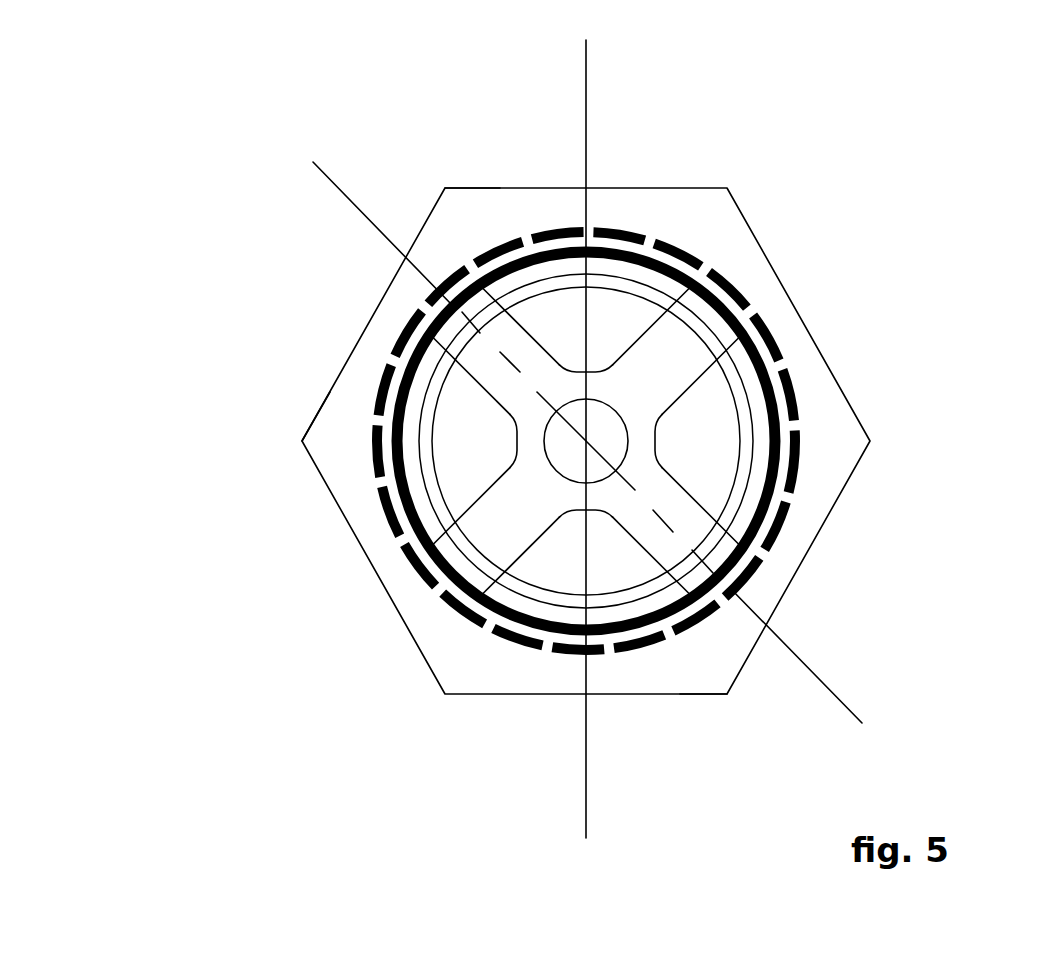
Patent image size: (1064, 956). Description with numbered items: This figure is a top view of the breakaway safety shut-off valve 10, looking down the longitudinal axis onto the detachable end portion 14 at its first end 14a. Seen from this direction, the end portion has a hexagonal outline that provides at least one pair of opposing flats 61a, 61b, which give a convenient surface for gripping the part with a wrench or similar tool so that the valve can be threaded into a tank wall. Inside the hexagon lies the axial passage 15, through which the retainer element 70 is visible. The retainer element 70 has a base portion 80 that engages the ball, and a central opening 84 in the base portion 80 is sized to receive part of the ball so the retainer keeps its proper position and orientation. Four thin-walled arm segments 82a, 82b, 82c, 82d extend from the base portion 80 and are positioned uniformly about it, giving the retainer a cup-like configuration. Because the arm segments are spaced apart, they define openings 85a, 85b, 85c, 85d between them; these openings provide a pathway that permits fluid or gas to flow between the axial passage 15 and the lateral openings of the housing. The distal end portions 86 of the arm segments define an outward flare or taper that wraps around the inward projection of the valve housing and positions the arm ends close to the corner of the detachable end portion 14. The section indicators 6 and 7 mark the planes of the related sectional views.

The section line 6- 6 is at (586, 40).
The section line 7- 7 is at (313, 162).
The breakaway safety shut-off valve 10 is at (930, 265).
The detachable end portion 14 is at (850, 386).
The first end 14a is at (338, 445).
The axial passage 15 is at (466, 565).
The opposing flat 61a is at (468, 188).
The opposing flat 61b is at (702, 694).
The retainer element 70 is at (470, 389).
The base portion 80 is at (640, 440).
The arm segment 82a is at (652, 537).
The arm segment 82b is at (515, 497).
The arm segment 82c is at (497, 262).
The arm segment 82d is at (665, 357).
The central opening 84 is at (570, 452).
The opening 85a is at (593, 571).
The opening 85b is at (443, 451).
The opening 85c is at (593, 326).
The opening 85d is at (683, 436).
The distal end portion 86 is at (460, 314).